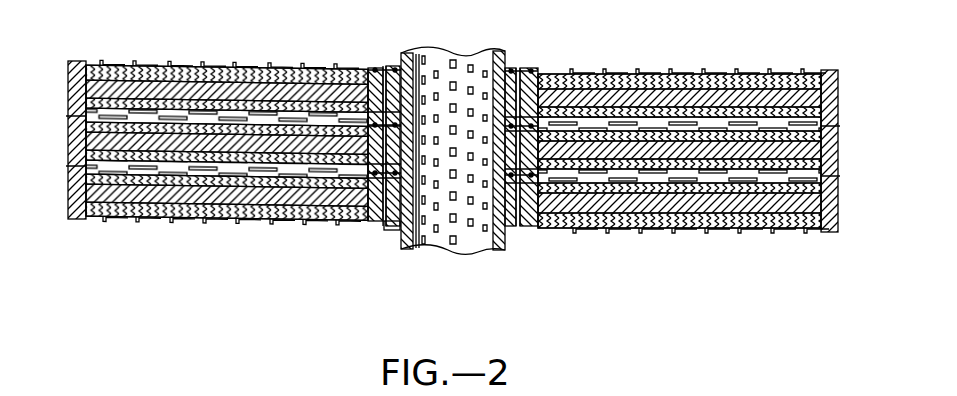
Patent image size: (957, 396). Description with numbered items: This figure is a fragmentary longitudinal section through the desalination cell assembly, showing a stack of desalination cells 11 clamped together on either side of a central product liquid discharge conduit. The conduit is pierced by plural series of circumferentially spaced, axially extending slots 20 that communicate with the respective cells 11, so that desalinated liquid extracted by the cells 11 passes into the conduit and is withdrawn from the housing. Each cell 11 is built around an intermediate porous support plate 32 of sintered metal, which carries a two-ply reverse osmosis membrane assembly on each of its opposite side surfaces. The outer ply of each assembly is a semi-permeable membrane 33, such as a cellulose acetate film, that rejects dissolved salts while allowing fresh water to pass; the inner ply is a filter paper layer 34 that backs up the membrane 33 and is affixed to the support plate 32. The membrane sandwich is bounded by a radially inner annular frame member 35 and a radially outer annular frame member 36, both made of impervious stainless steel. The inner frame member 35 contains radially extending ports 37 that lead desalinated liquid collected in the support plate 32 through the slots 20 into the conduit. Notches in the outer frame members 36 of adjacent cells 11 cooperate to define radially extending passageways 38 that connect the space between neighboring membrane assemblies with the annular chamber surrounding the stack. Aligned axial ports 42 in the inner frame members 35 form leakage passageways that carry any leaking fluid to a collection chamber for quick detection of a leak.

The desalination cell 11 is at (117, 58).
The axially extending slots 20 is at (445, 73).
The intermediate support plate 32 is at (150, 85).
The membrane 33 is at (272, 96).
The filter paper layer 34 is at (303, 95).
The radially inner annular frame member 35 is at (368, 65).
The radially outer annular frame member 36 is at (58, 63).
The radially extending ports 37 is at (379, 62).
The radially extending passageways 38 is at (60, 107).
The axial ports 42 is at (388, 222).